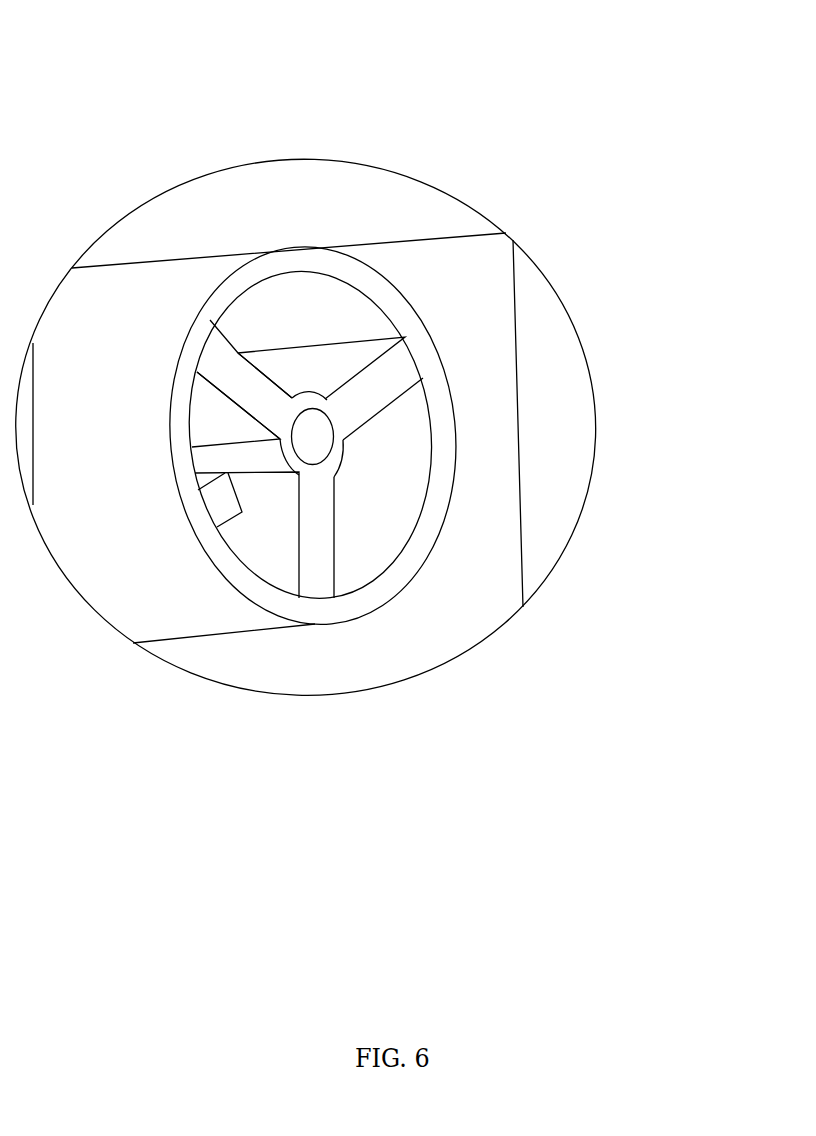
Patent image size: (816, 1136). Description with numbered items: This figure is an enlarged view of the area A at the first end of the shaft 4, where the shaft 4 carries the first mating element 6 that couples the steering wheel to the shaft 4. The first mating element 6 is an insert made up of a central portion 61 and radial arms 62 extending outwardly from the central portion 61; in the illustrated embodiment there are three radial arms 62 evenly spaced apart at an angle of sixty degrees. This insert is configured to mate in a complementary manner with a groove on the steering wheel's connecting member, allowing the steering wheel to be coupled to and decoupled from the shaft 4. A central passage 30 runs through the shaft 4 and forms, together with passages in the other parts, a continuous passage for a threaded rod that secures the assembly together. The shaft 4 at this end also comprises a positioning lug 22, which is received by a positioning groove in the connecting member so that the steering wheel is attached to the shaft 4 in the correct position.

The area A is at (560, 308).
The shaft 4 is at (140, 490).
The first mating element 6 is at (320, 540).
The central portion 61 is at (312, 427).
The radial arm 62 is at (242, 385).
The central passage 30 is at (323, 400).
The positioning lug 22 is at (217, 508).